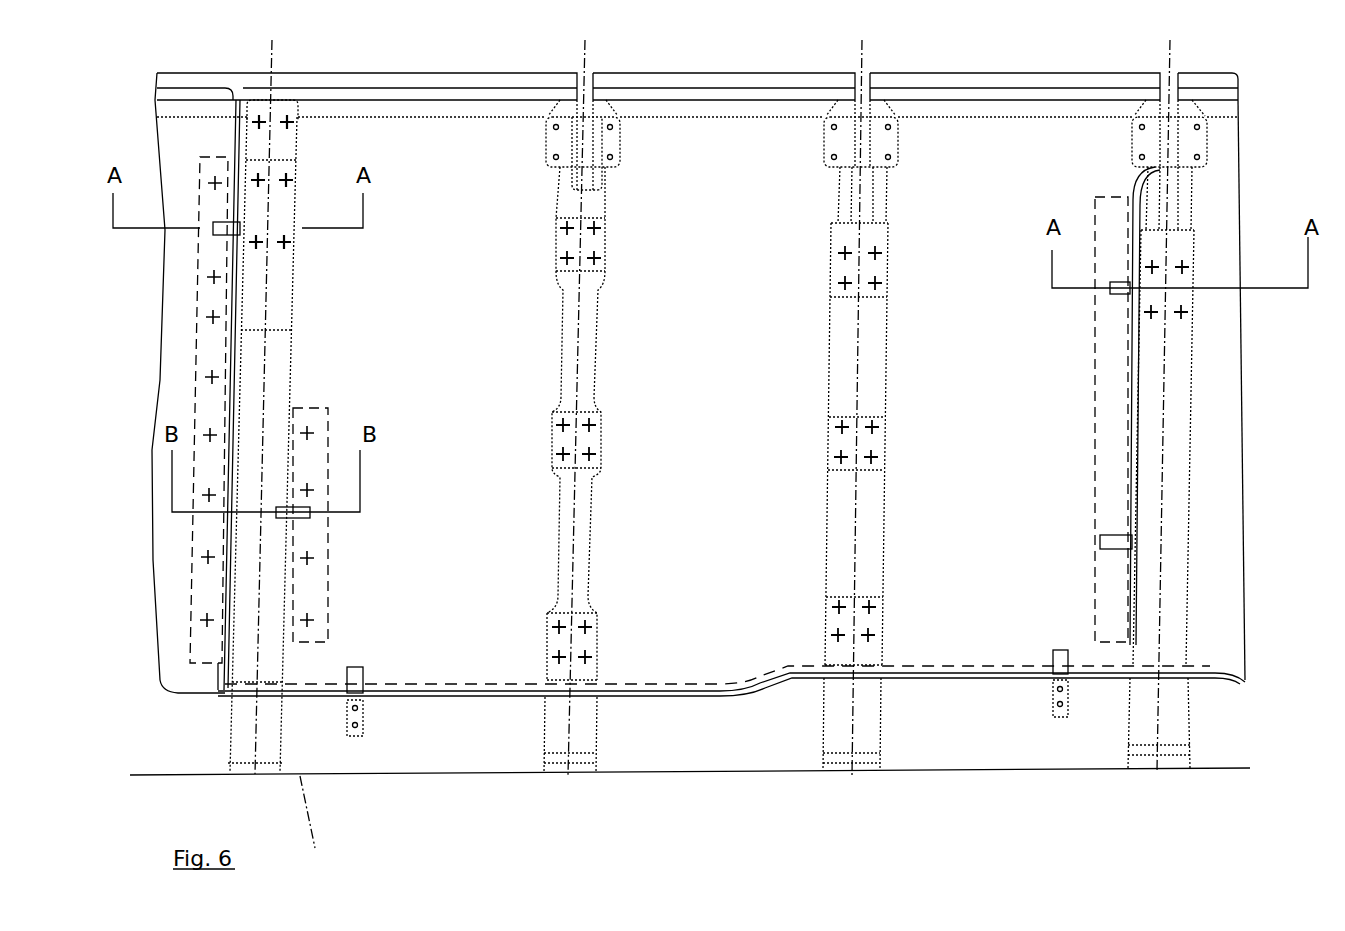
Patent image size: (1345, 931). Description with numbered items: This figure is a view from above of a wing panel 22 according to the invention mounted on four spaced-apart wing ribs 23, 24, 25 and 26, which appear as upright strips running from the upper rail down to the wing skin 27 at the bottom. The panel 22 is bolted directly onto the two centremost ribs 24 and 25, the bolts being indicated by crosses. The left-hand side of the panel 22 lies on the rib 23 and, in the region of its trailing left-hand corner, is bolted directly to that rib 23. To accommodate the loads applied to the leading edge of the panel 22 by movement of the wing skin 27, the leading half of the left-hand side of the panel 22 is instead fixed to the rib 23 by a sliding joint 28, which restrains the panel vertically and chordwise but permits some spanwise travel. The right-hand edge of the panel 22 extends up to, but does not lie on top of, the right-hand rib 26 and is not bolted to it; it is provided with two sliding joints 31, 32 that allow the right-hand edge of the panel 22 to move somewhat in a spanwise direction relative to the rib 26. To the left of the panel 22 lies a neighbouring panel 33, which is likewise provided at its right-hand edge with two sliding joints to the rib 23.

The wing panel 22 is at (437, 150).
The wing rib 23 is at (242, 718).
The wing rib 24 is at (560, 730).
The wing rib 25 is at (835, 728).
The wing rib 26 is at (1143, 730).
The wing skin 27 is at (734, 758).
The sliding joint 28 is at (300, 523).
The sliding joint 31 is at (1112, 532).
The sliding joint 32 is at (1108, 305).
The panel 33 is at (180, 143).